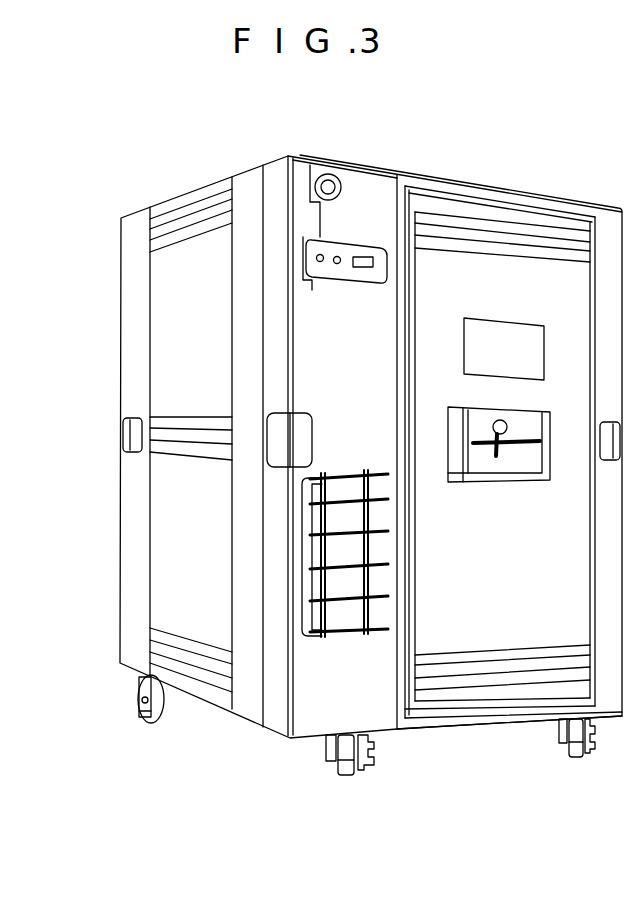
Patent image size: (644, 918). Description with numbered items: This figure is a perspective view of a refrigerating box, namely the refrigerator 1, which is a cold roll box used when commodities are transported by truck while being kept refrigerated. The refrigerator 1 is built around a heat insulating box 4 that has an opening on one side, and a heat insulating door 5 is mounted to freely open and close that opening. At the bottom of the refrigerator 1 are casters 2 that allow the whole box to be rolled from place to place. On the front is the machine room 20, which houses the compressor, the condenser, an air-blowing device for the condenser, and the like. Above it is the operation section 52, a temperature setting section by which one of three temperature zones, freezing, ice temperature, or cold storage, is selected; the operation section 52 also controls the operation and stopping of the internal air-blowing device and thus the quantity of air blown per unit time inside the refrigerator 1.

The refrigerator 1 is at (502, 183).
The casters 2 is at (153, 723).
The heat insulating box 4 is at (180, 342).
The heat insulating door 5 is at (563, 290).
The machine room 20 is at (343, 625).
The operation section 52 is at (350, 250).